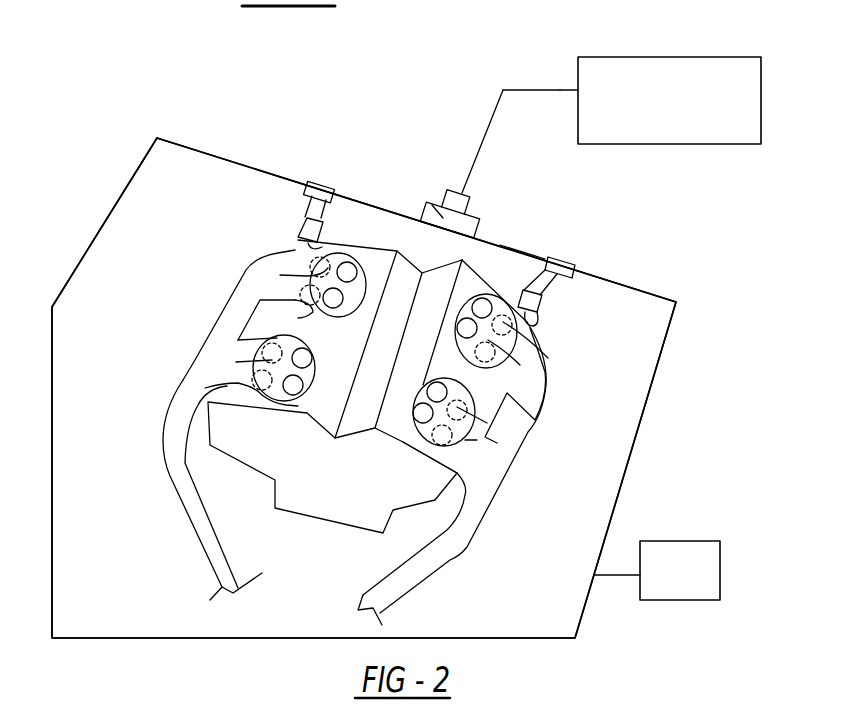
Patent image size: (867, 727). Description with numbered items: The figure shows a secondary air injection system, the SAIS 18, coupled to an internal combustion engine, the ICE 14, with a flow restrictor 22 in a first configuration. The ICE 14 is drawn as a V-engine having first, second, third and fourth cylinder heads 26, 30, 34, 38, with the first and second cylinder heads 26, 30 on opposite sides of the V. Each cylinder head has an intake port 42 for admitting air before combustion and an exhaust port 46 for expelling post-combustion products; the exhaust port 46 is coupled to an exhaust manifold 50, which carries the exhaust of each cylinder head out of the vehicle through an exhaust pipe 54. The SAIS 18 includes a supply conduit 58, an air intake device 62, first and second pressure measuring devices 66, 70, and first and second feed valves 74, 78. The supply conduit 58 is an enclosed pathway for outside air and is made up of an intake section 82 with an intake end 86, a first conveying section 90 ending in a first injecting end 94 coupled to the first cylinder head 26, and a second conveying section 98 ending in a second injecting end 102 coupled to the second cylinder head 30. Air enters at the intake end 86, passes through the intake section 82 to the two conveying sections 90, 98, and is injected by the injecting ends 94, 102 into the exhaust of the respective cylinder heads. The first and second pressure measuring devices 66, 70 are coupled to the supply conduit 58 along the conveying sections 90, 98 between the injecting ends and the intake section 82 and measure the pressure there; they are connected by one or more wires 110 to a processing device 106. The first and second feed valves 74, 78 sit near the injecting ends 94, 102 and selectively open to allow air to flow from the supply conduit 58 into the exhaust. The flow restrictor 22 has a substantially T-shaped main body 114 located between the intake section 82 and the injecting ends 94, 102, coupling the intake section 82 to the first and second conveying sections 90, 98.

The internal combustion engine (ICE) 14 is at (314, 544).
The secondary air injection system (SAIS) 18 is at (713, 257).
The flow restrictor 22 is at (480, 215).
The first cylinder head 26 is at (343, 313).
The second cylinder head 30 is at (505, 298).
The third cylinder head 34 is at (287, 415).
The fourth cylinder head 38 is at (408, 443).
The intake port 42 is at (350, 297).
The exhaust port 46 is at (313, 313).
The exhaust manifold 50 is at (213, 330).
The exhaust pipe 54 is at (210, 548).
The supply conduit 58 is at (488, 117).
The air intake device 62 is at (670, 57).
The first pressure measuring device 66 is at (312, 181).
The second pressure measuring device 70 is at (574, 264).
The first feed valve 74 is at (307, 219).
The second feed valve 78 is at (543, 296).
The intake section 82 is at (535, 90).
The intake end 86 is at (577, 90).
The first conveying section 90 is at (360, 200).
The first injecting end 94 is at (323, 243).
The second conveying section 98 is at (523, 252).
The second injecting end 102 is at (534, 326).
The processing device 106 is at (690, 600).
The wires 110 is at (52, 443).
The main body 114 is at (435, 203).